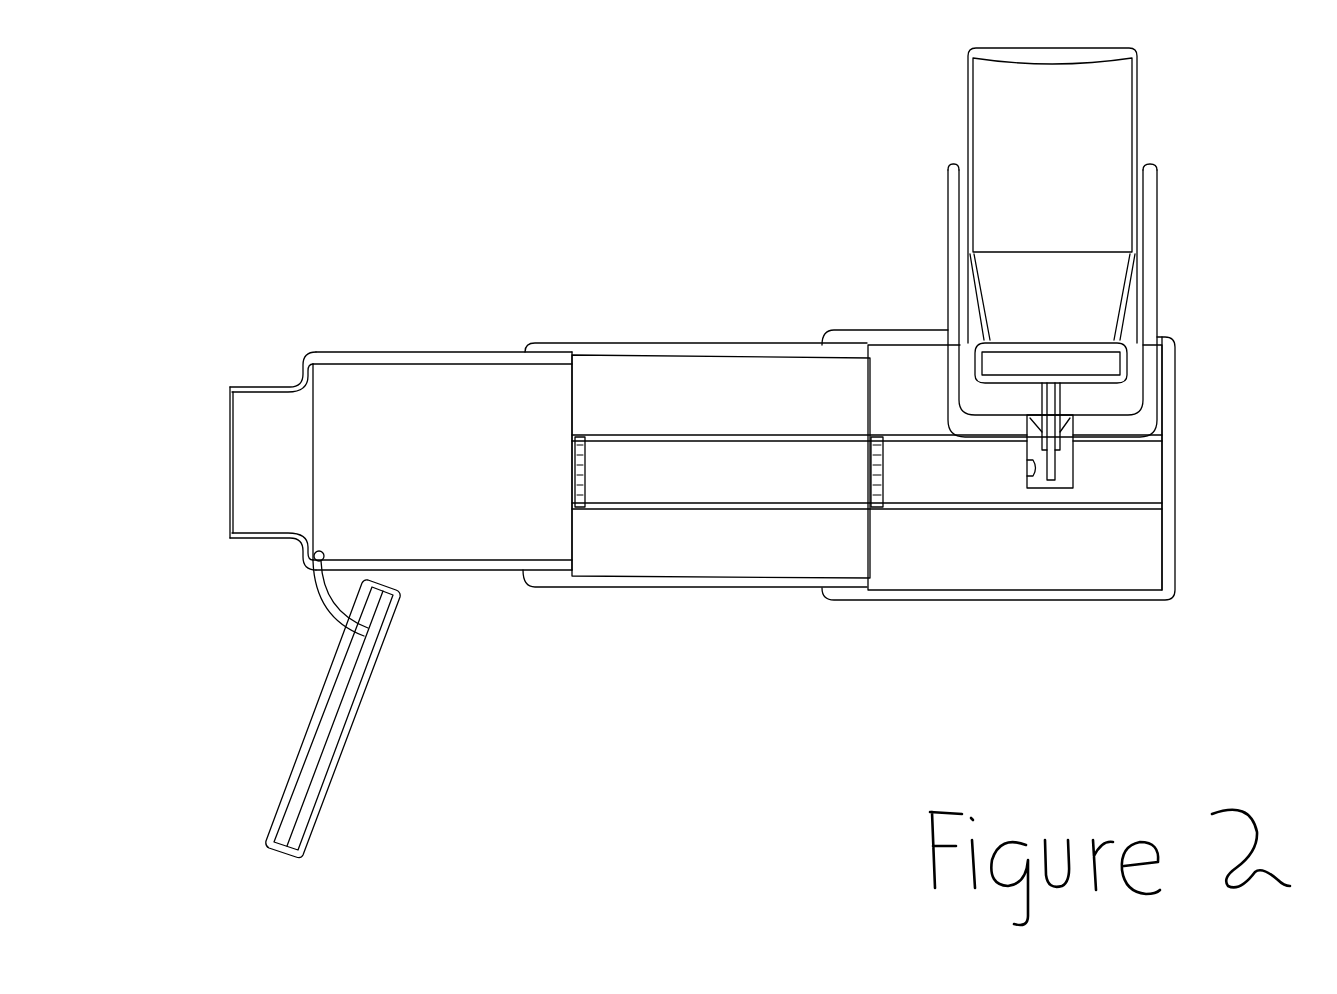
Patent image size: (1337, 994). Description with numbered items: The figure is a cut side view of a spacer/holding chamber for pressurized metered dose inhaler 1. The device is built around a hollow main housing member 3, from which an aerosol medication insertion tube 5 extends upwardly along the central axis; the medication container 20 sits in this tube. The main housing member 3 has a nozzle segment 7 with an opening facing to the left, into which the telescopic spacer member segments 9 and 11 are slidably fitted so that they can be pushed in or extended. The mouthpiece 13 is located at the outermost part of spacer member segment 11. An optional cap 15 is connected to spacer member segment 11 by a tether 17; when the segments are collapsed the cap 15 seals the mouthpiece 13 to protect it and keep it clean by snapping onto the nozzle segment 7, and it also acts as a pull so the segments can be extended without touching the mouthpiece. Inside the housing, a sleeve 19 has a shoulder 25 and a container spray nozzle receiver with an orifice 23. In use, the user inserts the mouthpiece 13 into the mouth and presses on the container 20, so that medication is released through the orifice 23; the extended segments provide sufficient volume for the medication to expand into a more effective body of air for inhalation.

The spacer/holding chamber for pressurized metered dose inhaler 1 is at (821, 148).
The main housing member 3 is at (1153, 388).
The aerosol medication insertion tube 5 is at (1152, 267).
The nozzle segment 7 is at (888, 345).
The telescopic spacer member segment 9 is at (730, 347).
The telescopic spacer member segment 11 is at (432, 360).
The mouthpiece 13 is at (258, 390).
The optional cap 15 is at (355, 732).
The tether 17 is at (332, 603).
The sleeve 19 is at (1138, 160).
The container 20 is at (1100, 108).
The orifice 23 is at (1028, 474).
The shoulder 25 is at (1098, 438).